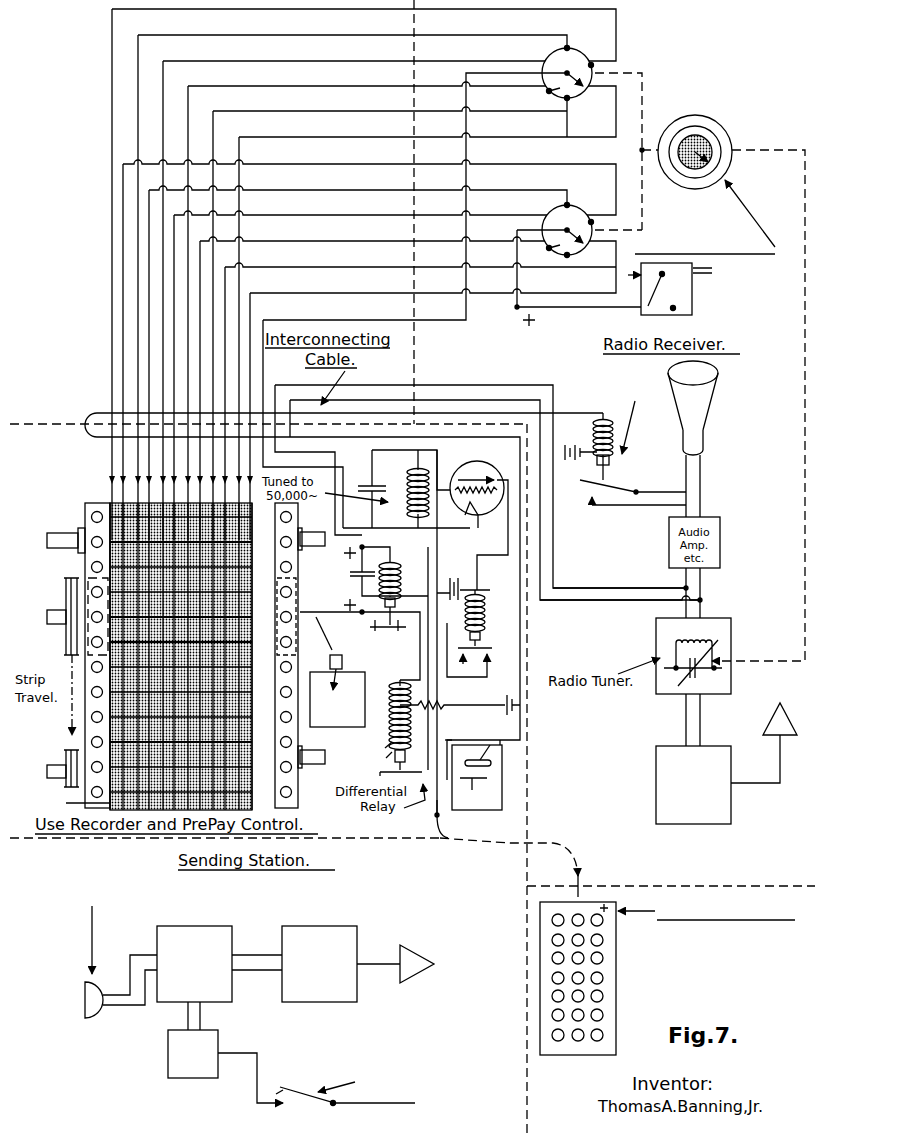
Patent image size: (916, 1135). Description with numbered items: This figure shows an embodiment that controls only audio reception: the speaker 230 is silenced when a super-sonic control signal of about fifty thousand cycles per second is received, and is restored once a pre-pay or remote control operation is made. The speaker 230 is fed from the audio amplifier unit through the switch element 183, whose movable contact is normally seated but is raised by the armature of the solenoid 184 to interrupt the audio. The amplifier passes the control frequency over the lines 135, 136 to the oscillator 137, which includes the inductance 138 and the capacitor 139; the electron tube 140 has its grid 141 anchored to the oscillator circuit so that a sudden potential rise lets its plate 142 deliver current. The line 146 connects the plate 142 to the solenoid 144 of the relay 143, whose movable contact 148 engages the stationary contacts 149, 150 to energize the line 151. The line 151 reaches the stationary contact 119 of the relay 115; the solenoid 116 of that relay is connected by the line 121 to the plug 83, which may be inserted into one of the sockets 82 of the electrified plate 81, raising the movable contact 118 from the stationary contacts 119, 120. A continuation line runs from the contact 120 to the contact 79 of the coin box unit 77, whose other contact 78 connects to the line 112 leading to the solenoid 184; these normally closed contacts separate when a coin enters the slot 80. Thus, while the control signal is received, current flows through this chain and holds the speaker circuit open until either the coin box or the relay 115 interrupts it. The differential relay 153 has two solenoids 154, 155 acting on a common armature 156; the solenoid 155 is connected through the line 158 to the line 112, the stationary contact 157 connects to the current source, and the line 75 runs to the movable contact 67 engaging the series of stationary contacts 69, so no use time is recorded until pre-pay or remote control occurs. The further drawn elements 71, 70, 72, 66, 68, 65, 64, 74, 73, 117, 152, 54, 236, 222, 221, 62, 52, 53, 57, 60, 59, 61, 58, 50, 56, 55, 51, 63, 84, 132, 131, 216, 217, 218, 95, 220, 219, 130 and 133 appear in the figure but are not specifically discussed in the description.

The conductors 71 is at (456, 34).
The conductors 70 is at (456, 189).
The line 75 is at (470, 148).
The conductor 72 is at (516, 278).
The movable contact 67 is at (578, 84).
The stationary contacts 69 is at (548, 91).
The selector switch 66 is at (578, 243).
The switch contact 68 is at (551, 250).
The conductor 65 is at (643, 148).
The station selector dial 64 is at (718, 123).
The main switch 74 is at (690, 272).
The conductor 73 is at (629, 275).
The line 112 is at (486, 400).
The oscillator 137 is at (406, 489).
The capacitor 139 is at (369, 489).
The inductance 138 is at (408, 482).
The electron tube 140 is at (479, 516).
The plate 142 is at (472, 477).
The grid 141 is at (470, 496).
The line 146 is at (476, 557).
The relay 143 is at (378, 596).
The solenoid 144 is at (403, 581).
The stationary contact 149 is at (377, 622).
The movable contact 148 is at (389, 637).
The stationary contact 150 is at (401, 622).
The line 151 is at (458, 686).
The conductor 54 is at (300, 607).
The relay coil 152 is at (418, 668).
The solenoid 154 is at (382, 708).
The differential relay 153 is at (385, 748).
The solenoid 155 is at (386, 758).
The stationary contact 157 is at (380, 773).
The relay 115 is at (485, 625).
The solenoid 116 is at (486, 608).
The core 117 is at (482, 630).
The stationary contact 119 is at (471, 639).
The movable contact 118 is at (478, 664).
The stationary contact 120 is at (484, 650).
The coin box unit 77 is at (489, 792).
The contact 78 is at (489, 777).
The contact 79 is at (505, 800).
The common armature 156 is at (460, 733).
The coin receiving slot 80 is at (487, 748).
The line 158 is at (501, 744).
The line 121 is at (435, 815).
The speaker 230 is at (697, 405).
The line 135 is at (553, 533).
The line 136 is at (540, 557).
The conductor 236 is at (805, 467).
The solenoid 184 is at (596, 424).
The switch element 183 is at (622, 487).
The radio receiving unit 222 is at (665, 756).
The antenna 221 is at (772, 717).
The recording strip 62 is at (110, 497).
The sprocket holes 52 is at (290, 742).
The sprocket 53 is at (84, 578).
The feed shaft 57 is at (80, 534).
The feed roller 60 is at (66, 591).
The roller 59 is at (72, 749).
The shaft 61 is at (66, 781).
The strip guide 58 is at (79, 803).
The contact 50 is at (306, 535).
The conductor 56 is at (316, 640).
The motor connection 55 is at (336, 664).
The contact 51 is at (313, 756).
The contact 63 is at (290, 792).
The cable 84 is at (507, 848).
The plug 83 is at (580, 872).
The plate 81 is at (667, 978).
The sockets 82 is at (603, 996).
The microphone 132 is at (92, 1012).
The audio amplifier 131 is at (205, 932).
The conductor 216 is at (248, 954).
The conductor 217 is at (256, 971).
The radio transmitter 218 is at (328, 930).
The antenna 95 is at (412, 953).
The conductor 220 is at (188, 1016).
The conductor 219 is at (200, 1016).
The oscillator 130 is at (193, 1070).
The special signal switch 133 is at (295, 1090).